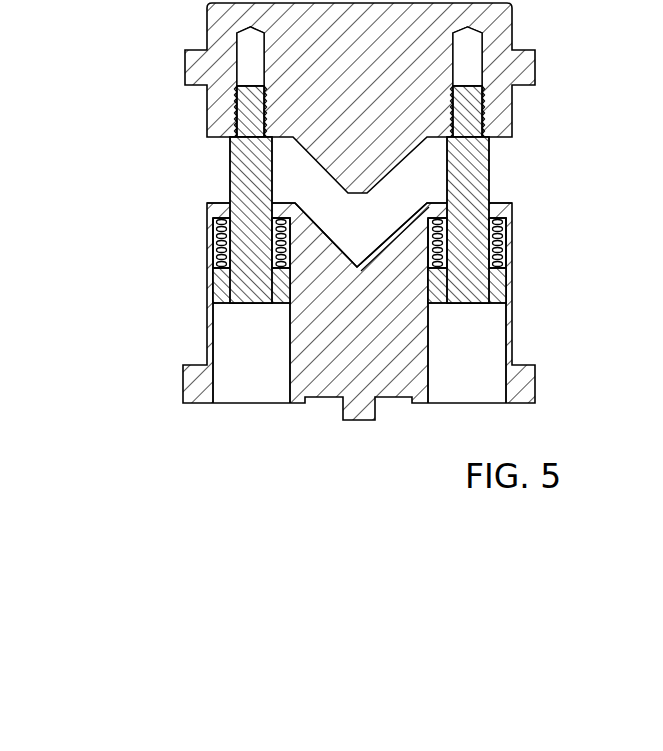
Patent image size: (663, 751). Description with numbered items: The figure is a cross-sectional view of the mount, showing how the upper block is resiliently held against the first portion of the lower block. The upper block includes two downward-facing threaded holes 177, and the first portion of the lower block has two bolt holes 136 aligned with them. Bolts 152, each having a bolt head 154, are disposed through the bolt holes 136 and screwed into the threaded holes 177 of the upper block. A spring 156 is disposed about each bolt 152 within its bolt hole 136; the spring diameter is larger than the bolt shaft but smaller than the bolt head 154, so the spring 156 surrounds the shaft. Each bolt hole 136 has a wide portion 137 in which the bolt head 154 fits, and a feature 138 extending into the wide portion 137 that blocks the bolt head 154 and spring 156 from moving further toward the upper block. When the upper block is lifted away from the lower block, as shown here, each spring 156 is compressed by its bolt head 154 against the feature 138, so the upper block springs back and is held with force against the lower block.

The bolt hole 136 is at (253, 415).
The wide portion 137 is at (192, 212).
The feature 138 is at (238, 342).
The bolt 152 is at (230, 167).
The bolt head 154 is at (223, 292).
The spring 156 is at (226, 237).
The downward-facing threaded hole 177 is at (222, 105).